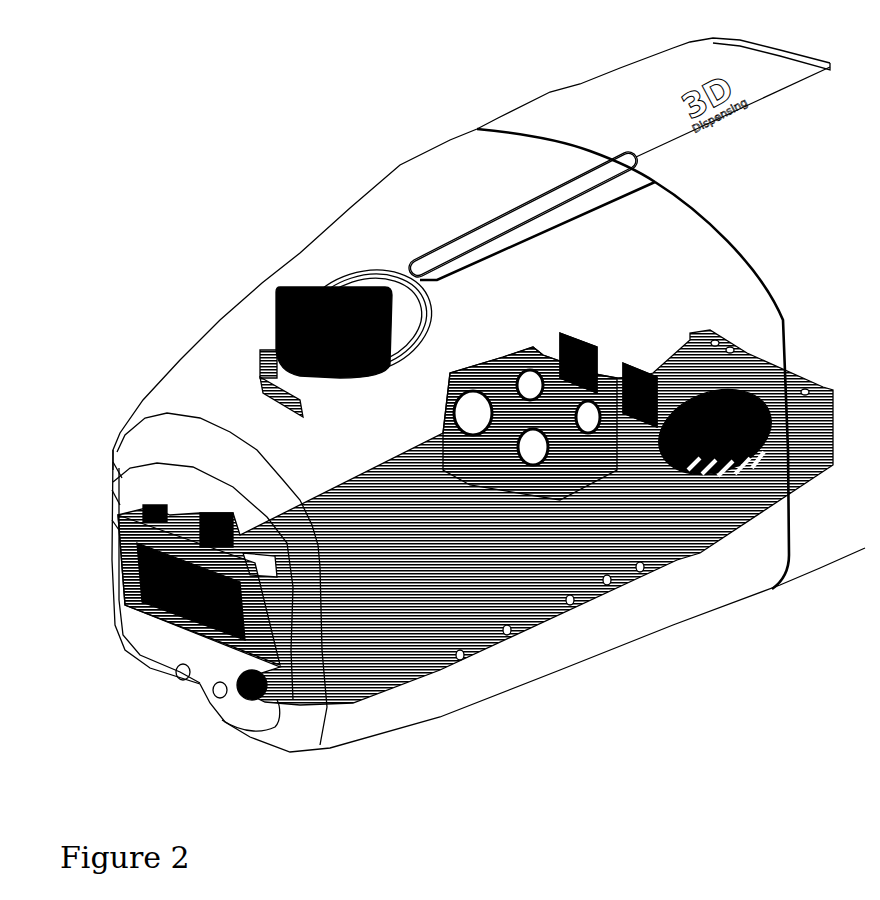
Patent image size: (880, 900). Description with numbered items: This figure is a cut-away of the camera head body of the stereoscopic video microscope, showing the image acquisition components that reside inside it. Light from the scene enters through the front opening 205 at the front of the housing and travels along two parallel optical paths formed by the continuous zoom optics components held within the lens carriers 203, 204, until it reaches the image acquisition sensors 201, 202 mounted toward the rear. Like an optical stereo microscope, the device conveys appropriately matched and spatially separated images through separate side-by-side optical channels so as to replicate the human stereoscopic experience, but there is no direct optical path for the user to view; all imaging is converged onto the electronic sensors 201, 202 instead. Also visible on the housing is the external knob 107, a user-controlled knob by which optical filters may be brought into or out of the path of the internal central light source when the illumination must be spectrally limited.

The external knob 107 is at (266, 298).
The image acquisition sensor 201 is at (557, 317).
The image acquisition sensor 202 is at (733, 552).
The lens carrier 203 is at (610, 345).
The lens carrier 204 is at (473, 356).
The front opening 205 is at (152, 640).